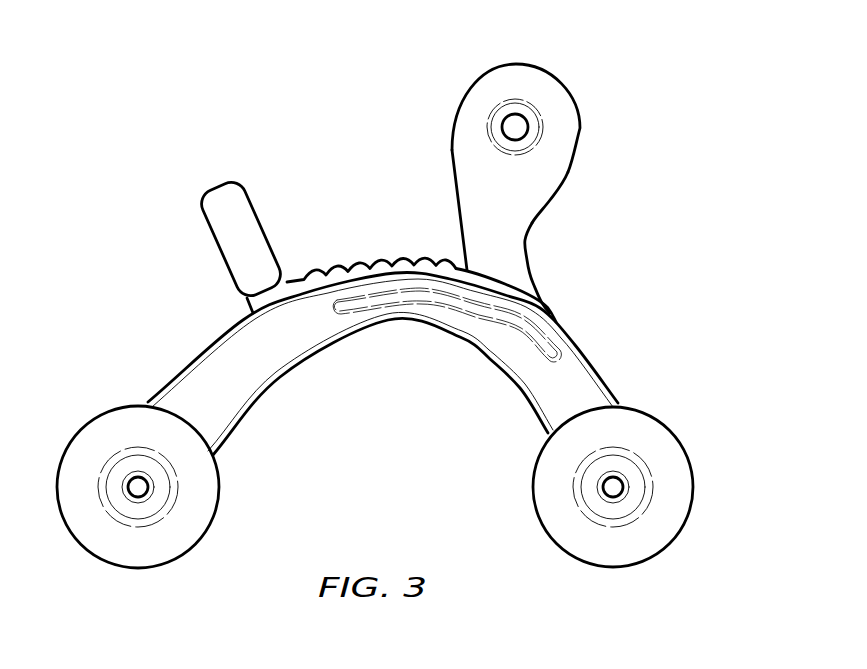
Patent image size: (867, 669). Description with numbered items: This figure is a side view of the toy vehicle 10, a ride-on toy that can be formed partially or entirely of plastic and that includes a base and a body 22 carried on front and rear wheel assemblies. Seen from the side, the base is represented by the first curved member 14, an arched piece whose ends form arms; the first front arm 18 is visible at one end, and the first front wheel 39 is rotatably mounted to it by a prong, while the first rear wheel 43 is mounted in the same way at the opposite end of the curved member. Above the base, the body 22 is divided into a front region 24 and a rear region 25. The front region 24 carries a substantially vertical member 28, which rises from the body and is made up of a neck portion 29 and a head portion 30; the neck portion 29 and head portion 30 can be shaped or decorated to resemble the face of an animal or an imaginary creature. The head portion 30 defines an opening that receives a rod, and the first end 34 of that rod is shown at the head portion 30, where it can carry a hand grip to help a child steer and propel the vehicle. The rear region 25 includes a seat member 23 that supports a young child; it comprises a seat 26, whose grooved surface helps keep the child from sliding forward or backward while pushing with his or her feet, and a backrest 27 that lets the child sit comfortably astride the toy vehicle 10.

The toy vehicle 10 is at (707, 100).
The first curved member 14 is at (215, 337).
The first front arm 18 is at (575, 345).
The body 22 is at (668, 222).
The seat member 23 is at (333, 175).
The front region 24 is at (608, 250).
The rear region 25 is at (178, 247).
The seat 26 is at (372, 262).
The backrest 27 is at (213, 198).
The substantially vertical member 28 is at (588, 195).
The neck portion 29 is at (528, 240).
The head portion 30 is at (533, 80).
The first end 34 is at (505, 128).
The first front wheel 39 is at (675, 448).
The first rear wheel 43 is at (78, 448).